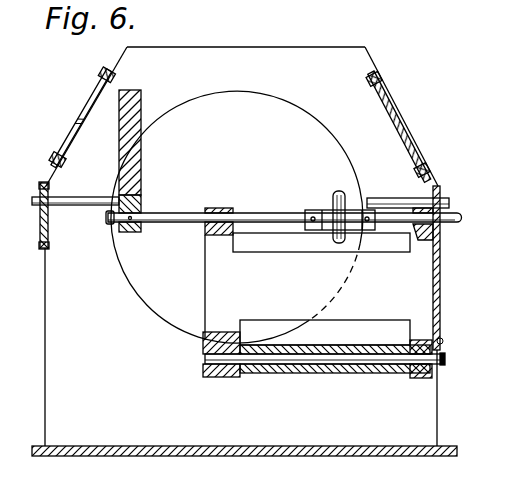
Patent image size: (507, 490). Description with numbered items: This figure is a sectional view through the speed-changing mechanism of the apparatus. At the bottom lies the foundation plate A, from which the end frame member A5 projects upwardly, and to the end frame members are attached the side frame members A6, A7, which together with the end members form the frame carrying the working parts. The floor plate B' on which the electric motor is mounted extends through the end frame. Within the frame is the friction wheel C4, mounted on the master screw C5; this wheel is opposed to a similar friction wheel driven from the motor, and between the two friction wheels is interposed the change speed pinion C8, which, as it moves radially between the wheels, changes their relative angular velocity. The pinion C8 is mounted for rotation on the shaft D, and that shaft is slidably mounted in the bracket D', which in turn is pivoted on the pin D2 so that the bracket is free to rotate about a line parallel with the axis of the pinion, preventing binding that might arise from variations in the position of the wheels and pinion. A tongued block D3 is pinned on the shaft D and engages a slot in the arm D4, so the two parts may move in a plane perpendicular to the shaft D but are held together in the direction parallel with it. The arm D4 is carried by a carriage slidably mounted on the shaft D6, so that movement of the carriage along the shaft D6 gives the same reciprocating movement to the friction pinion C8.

The foundation plate A is at (332, 457).
The end frame member A5 is at (420, 405).
The side frame member A6 is at (398, 107).
The side frame member A7 is at (95, 95).
The floor plate B' is at (325, 380).
The friction wheel C4 is at (249, 96).
The master screw C5 is at (241, 211).
The change speed pinion C8 is at (336, 192).
The shaft D is at (284, 196).
The bracket D' is at (284, 276).
The pin D2 is at (347, 357).
The tongued block D3 is at (140, 205).
The arm D4 is at (133, 123).
The shaft D6 is at (84, 197).